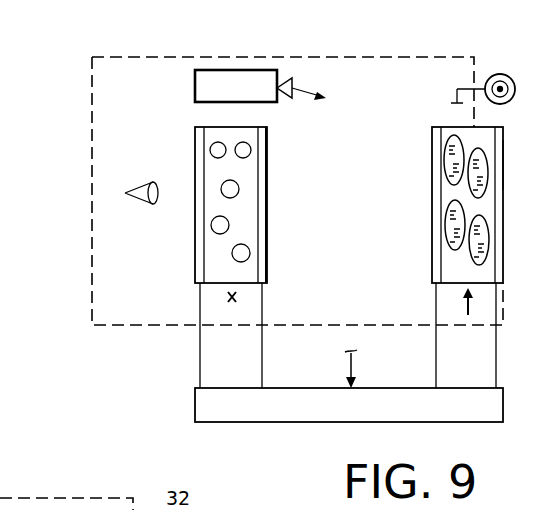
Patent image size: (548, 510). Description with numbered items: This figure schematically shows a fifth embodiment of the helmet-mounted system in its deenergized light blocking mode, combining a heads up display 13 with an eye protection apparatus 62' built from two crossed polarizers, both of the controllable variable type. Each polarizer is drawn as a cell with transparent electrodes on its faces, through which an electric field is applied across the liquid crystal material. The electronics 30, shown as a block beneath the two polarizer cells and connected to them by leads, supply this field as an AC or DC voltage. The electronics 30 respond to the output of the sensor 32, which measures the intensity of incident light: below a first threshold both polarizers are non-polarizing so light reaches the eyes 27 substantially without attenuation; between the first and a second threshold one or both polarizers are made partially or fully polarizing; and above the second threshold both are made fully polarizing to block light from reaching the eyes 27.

The heads up display 13 is at (250, 70).
The sensor 32 is at (503, 74).
The eyes 27 is at (145, 203).
The eye protection apparatus 62' is at (489, 322).
The electronics 30 is at (485, 410).